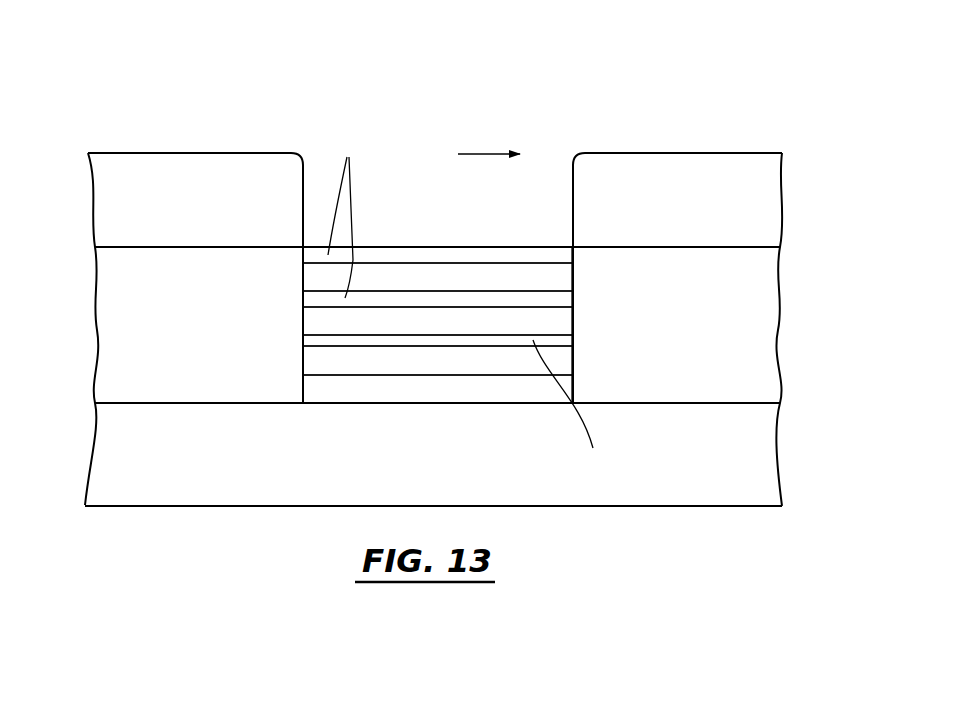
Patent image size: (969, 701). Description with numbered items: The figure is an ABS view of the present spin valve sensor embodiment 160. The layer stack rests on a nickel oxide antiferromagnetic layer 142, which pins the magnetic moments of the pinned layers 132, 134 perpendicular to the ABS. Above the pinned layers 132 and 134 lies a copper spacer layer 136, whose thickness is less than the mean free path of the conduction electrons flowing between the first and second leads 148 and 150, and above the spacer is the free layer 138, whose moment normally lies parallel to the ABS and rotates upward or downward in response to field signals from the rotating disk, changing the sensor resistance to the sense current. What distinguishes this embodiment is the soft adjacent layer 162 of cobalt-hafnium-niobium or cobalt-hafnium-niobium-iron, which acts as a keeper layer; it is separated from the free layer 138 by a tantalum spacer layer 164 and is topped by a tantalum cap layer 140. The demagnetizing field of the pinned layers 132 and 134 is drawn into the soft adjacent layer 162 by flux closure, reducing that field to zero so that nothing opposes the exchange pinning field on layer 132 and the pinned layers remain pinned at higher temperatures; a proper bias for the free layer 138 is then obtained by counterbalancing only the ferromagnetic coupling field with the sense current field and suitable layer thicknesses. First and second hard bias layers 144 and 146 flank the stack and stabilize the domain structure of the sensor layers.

The embodiment of spin valve sensor 160 is at (445, 130).
The soft adjacent layer 162 is at (317, 275).
The cap layer of Ta 140 is at (380, 253).
The Ta spacer layer 164 is at (563, 302).
The free layer 138 is at (487, 318).
The copper spacer layer 136 is at (547, 343).
The pinned layer 134 is at (375, 360).
The pinned layer 132 is at (350, 388).
The antiferromagnetic layer of NiO 142 is at (725, 482).
The first hard bias layer 144 is at (112, 306).
The second hard bias layer 146 is at (762, 317).
The first lead 148 is at (112, 201).
The second lead 150 is at (762, 218).